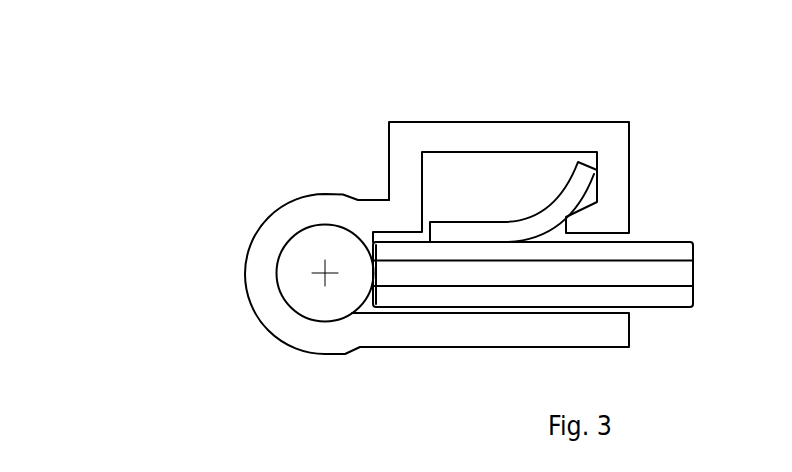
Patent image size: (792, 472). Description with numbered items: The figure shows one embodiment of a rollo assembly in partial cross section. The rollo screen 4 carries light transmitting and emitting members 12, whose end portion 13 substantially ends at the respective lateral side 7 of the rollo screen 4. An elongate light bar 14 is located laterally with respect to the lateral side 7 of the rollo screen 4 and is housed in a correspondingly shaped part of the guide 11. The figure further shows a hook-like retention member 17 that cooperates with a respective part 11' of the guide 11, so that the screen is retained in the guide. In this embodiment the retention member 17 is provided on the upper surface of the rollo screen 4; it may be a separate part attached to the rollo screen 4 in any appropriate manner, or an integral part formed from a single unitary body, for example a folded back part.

The guide 11 is at (417, 234).
The part of the guide 11' is at (437, 201).
The elongate light bar 14 is at (310, 282).
The rollo screen 4 is at (561, 290).
The light transmitting and emitting members 12 is at (598, 275).
The end portion 13 is at (376, 266).
The lateral side 7 is at (387, 245).
The retention member 17 is at (575, 187).